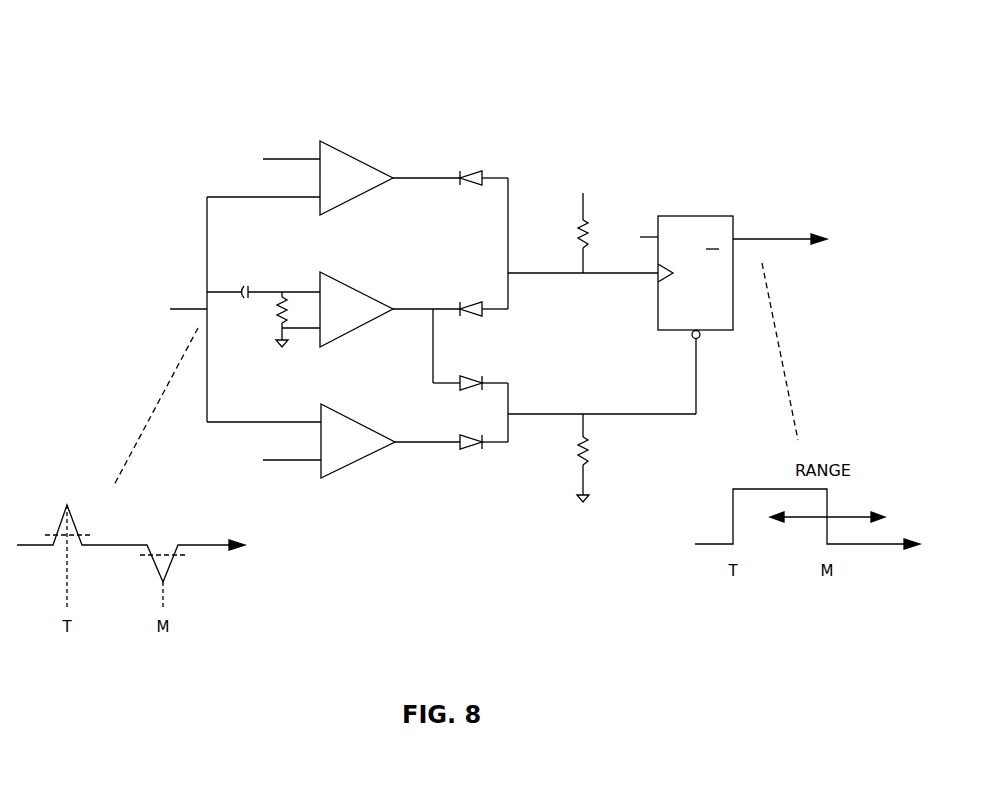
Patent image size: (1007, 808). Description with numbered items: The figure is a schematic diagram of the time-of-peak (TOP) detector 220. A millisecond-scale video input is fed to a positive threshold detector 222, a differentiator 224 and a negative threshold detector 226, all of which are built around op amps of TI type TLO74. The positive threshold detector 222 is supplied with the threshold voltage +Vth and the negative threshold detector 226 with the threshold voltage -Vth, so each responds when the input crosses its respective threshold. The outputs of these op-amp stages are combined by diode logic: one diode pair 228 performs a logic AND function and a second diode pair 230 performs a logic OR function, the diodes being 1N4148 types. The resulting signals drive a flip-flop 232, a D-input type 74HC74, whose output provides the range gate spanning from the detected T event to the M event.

The time-of-peak (TOP) detector 220 is at (677, 124).
The positive threshold detector 222 is at (385, 168).
The differentiator 224 is at (262, 368).
The negative threshold detector 226 is at (385, 460).
The diode pair (AND function) 228 is at (527, 158).
The diode pair (OR function) 230 is at (526, 482).
The flip-flop 232 is at (725, 208).